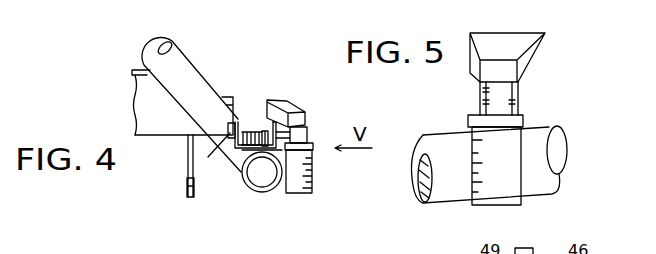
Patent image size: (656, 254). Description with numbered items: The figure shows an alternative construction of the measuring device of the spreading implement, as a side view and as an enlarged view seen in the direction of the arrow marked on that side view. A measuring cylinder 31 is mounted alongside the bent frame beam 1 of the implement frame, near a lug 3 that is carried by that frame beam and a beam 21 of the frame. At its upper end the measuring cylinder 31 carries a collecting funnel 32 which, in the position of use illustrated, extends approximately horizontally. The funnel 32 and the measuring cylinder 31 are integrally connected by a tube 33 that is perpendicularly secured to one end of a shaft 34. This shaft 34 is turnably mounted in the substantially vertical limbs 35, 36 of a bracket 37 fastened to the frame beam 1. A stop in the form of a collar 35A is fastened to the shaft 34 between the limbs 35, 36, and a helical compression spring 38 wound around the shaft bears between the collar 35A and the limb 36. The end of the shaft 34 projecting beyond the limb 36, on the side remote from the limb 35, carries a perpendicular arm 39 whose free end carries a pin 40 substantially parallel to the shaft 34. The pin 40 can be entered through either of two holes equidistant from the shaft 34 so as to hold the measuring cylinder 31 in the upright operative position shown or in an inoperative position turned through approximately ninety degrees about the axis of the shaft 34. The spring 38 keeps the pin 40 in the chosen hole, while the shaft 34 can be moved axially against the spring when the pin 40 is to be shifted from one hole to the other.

In FIG. 4, the frame beam 1 is at (268, 190).
In FIG. 5, the frame beam 1 is at (437, 136).
In FIG. 4, the lug 3 is at (187, 179).
In FIG. 4, the beam 21 is at (139, 83).
In FIG. 4, the measuring cylinder 31 is at (302, 192).
In FIG. 5, the measuring cylinder 31 is at (486, 170).
In FIG. 4, the collecting funnel 32 is at (290, 106).
In FIG. 5, the collecting funnel 32 is at (543, 57).
In FIG. 4, the tube 33 is at (309, 131).
In FIG. 5, the tube 33 is at (520, 104).
In FIG. 4, the shaft 34 is at (307, 141).
In FIG. 4, the limb 35 is at (267, 118).
In FIG. 5, the limb 35 is at (482, 101).
In FIG. 4, the collar 35A is at (264, 130).
In FIG. 4, the limb 36 is at (239, 121).
In FIG. 5, the limb 36 is at (482, 86).
In FIG. 4, the bracket 37 is at (242, 165).
In FIG. 4, the helical compression spring 38 is at (258, 131).
In FIG. 4, the arm 39 is at (214, 154).
In FIG. 4, the pin 40 is at (230, 123).